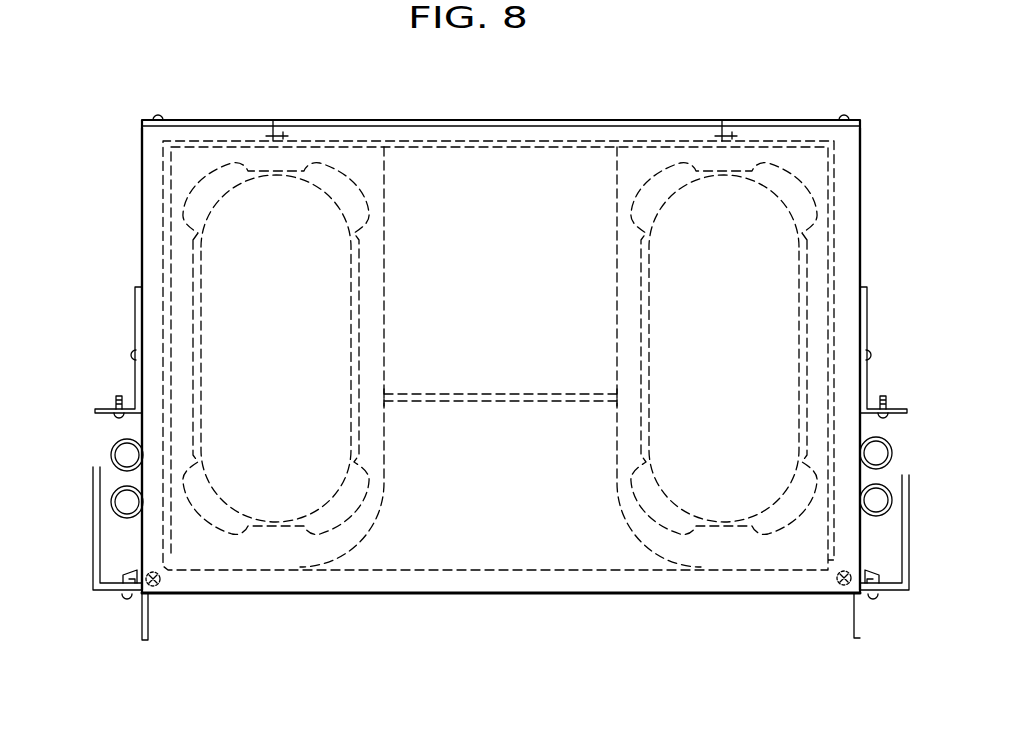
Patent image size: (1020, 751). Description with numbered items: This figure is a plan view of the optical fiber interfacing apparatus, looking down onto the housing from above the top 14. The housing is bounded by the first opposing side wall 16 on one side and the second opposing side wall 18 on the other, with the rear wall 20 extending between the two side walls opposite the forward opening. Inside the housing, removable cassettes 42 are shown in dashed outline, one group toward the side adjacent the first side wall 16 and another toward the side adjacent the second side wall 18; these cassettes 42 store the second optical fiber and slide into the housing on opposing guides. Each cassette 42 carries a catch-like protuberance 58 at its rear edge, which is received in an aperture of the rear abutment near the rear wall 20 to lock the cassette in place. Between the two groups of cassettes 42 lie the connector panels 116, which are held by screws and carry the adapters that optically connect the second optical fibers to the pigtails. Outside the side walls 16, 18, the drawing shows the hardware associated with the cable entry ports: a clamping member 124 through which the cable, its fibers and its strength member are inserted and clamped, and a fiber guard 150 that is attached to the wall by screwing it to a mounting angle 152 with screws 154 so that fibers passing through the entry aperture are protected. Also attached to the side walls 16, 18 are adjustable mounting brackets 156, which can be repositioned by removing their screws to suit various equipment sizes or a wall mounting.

The top 14 is at (495, 522).
The first opposing side wall 16 is at (142, 240).
The second opposing side wall 18 is at (860, 236).
The rear wall 20 is at (573, 120).
The removable cassette 42 is at (372, 502).
The catch-like protuberance 58 is at (273, 118).
The connector panel 116 is at (512, 401).
The clamping member 124 is at (118, 483).
The fiber guard 150 is at (97, 512).
The mounting angle 152 is at (130, 578).
The screw 154 is at (122, 602).
The adjustable mounting bracket 156 is at (137, 338).